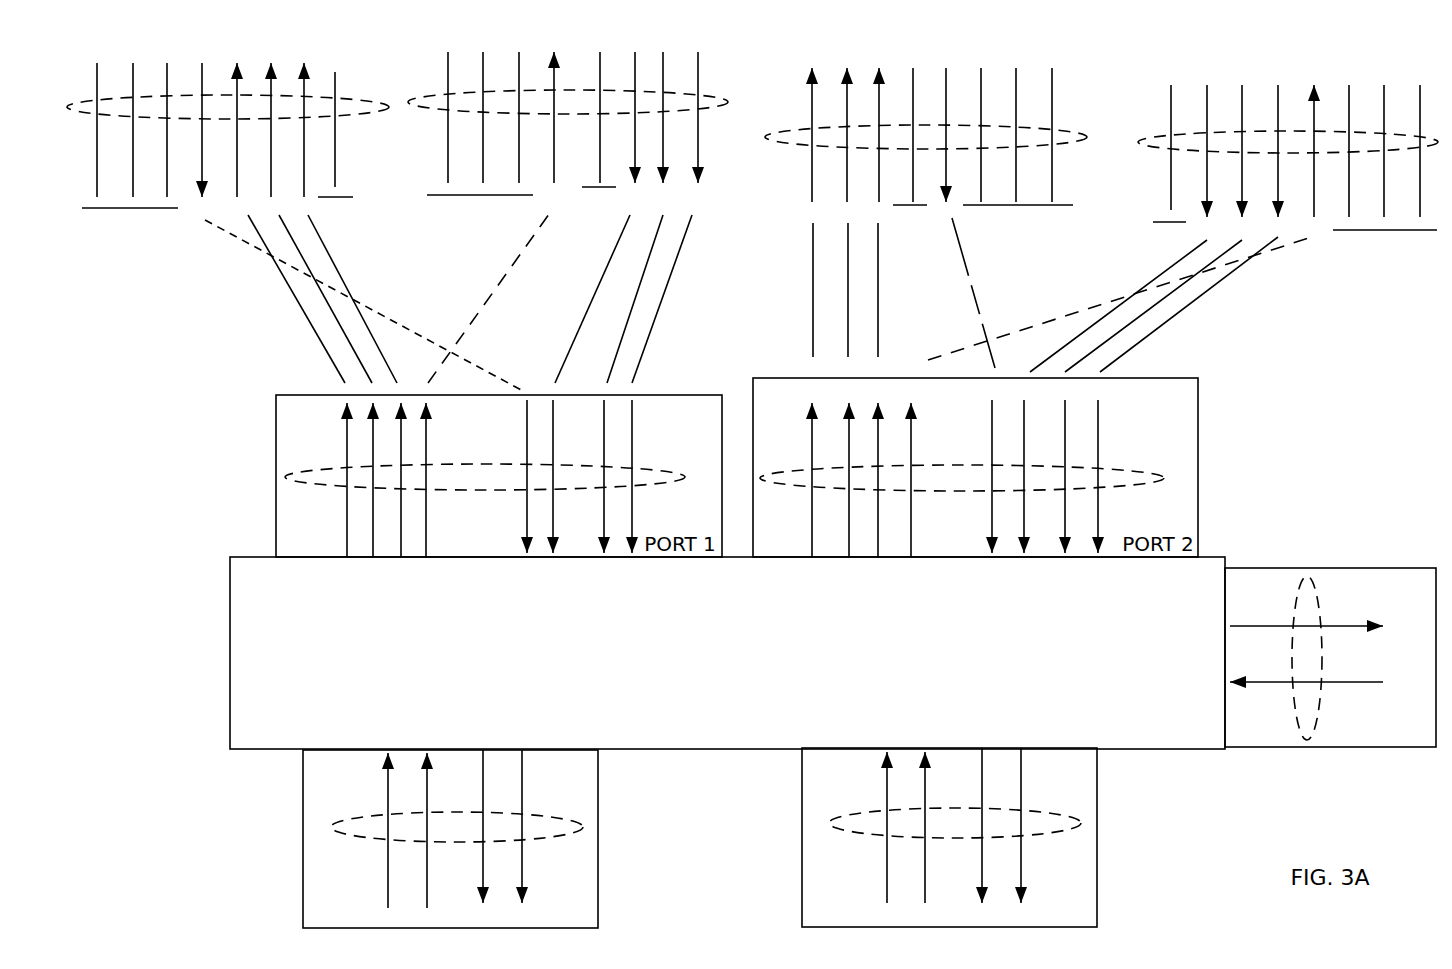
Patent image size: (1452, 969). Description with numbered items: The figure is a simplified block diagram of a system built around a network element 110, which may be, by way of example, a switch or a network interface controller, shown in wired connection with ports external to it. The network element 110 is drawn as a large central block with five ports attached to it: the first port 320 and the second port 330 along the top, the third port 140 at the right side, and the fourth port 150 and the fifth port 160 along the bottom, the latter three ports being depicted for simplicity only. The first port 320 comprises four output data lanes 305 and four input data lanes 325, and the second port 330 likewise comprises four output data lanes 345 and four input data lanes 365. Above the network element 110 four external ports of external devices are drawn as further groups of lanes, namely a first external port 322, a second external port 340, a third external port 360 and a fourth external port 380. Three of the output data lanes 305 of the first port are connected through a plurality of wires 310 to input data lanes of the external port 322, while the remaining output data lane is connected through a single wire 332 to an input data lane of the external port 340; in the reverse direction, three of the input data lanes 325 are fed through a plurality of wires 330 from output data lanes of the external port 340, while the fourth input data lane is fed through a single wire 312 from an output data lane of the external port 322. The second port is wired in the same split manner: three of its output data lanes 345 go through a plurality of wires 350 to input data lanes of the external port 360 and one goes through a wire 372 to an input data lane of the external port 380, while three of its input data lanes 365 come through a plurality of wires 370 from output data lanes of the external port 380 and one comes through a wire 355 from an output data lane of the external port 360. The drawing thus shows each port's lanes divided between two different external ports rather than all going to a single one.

The network element 110 is at (230, 728).
The port 3 140 is at (1285, 568).
The port 4 150 is at (1097, 868).
The port 5 160 is at (598, 870).
The output data lanes 305 is at (438, 424).
The plurality of wires 310 is at (292, 317).
The wire 312 is at (253, 245).
The port 1 320 is at (275, 477).
The external port 322 is at (188, 220).
The input data lanes 325 is at (637, 431).
The plurality of wires 330 is at (582, 312).
The wire 332 is at (498, 283).
The external port 340 is at (620, 198).
The output data lanes 345 is at (923, 417).
The plurality of wires 350 is at (808, 318).
The wire 355 is at (957, 237).
The external port 360 is at (792, 192).
The input data lanes 365 is at (1112, 417).
The plurality of wires 370 is at (1165, 352).
The wire 372 is at (1070, 315).
The external port 380 is at (1332, 252).